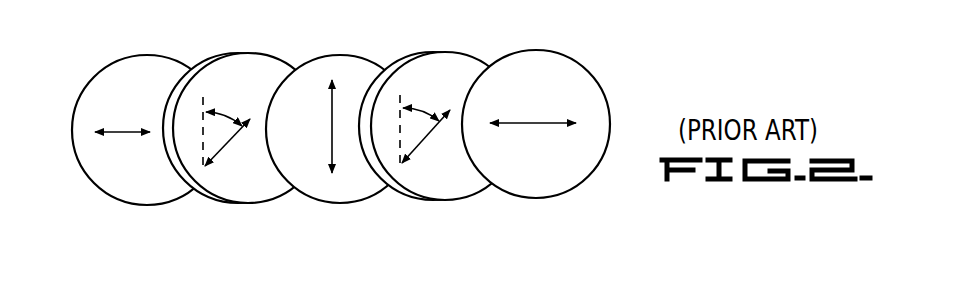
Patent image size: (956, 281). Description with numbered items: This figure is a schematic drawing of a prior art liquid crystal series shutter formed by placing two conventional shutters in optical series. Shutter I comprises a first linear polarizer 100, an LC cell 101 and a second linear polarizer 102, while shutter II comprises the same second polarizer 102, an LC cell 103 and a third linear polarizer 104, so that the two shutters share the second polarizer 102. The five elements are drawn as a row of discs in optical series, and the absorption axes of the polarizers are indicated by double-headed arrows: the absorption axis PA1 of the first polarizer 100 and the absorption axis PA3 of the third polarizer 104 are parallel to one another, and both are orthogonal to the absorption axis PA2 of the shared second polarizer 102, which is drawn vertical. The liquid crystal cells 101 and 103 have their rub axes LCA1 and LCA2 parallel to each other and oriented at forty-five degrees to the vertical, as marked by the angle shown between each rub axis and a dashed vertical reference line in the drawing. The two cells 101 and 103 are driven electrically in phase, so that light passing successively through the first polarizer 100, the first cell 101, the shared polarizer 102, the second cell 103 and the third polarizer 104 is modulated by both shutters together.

The first linear polarizer 100 is at (137, 55).
The LC cell 101 is at (233, 55).
The second linear polarizer 102 is at (352, 54).
The LC cell 103 is at (433, 51).
The third linear polarizer 104 is at (557, 50).
The absorption axis PA1 is at (117, 133).
The rub axis LCA1 is at (232, 143).
The absorption axis PA2 is at (335, 148).
The rub axis LCA2 is at (428, 143).
The absorption axis PA3 is at (528, 125).